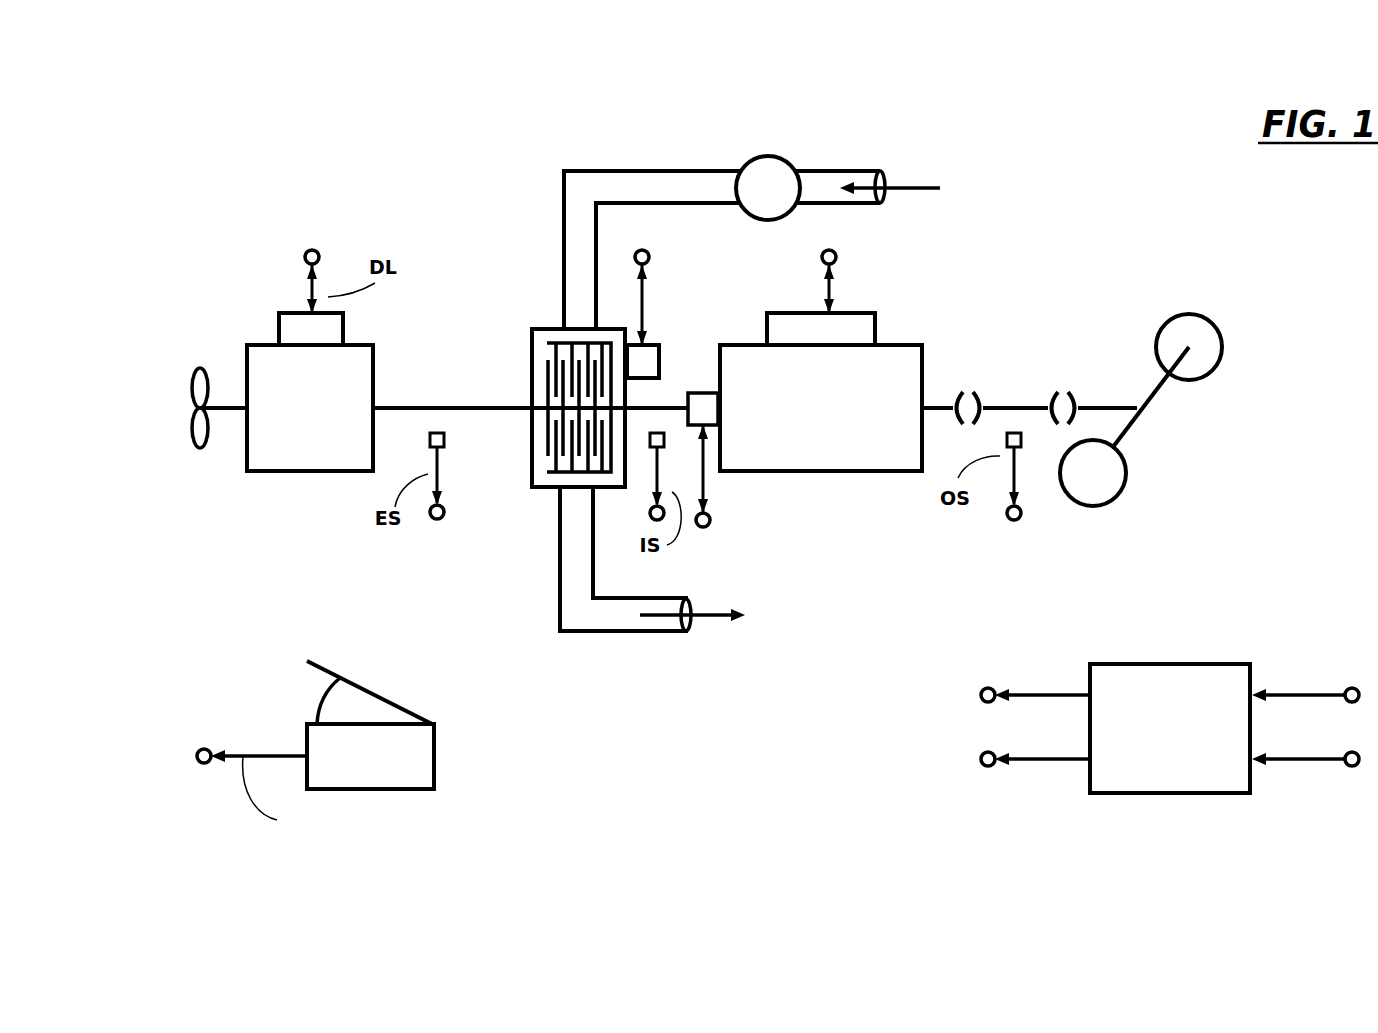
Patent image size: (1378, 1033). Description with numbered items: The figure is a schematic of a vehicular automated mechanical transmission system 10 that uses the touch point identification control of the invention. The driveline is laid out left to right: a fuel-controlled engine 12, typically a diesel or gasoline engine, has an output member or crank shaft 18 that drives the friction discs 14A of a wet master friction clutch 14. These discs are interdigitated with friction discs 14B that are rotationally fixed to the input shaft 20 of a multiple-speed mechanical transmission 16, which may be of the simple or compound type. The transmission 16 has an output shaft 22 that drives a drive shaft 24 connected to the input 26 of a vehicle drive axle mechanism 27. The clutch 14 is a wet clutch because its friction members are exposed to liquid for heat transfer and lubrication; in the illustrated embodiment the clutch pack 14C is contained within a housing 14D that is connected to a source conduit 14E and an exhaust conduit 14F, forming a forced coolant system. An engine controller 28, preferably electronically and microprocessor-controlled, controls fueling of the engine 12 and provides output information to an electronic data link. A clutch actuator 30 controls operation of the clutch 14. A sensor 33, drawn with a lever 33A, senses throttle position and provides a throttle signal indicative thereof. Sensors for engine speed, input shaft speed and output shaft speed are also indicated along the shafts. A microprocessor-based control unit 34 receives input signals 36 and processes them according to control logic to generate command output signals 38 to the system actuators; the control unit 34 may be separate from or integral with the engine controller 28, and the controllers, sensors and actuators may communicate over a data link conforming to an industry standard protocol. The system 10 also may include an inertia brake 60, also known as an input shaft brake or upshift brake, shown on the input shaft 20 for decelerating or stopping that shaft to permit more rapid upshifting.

The vehicular automated mechanical transmission system 10 is at (988, 95).
The fuel-controlled engine 12 is at (310, 440).
The wet master friction clutch 14 is at (458, 371).
The friction discs 14A is at (555, 392).
The friction discs 14B is at (557, 465).
The clutch pack 14C is at (547, 490).
The housing 14D is at (531, 329).
The source conduit 14E is at (582, 203).
The exhaust conduit 14F is at (585, 557).
The multiple-speed mechanical transmission 16 is at (845, 445).
The crank shaft 18 is at (423, 407).
The input shaft 20 is at (667, 406).
The output shaft 22 is at (858, 330).
The drive shaft 24 is at (998, 405).
The input 26 is at (1125, 405).
The vehicle drive axle mechanism 27 is at (1160, 441).
The engine controller 28 is at (297, 330).
The clutch actuator 30 is at (643, 360).
The sensor 33 is at (352, 740).
The throttle lever 33A is at (375, 691).
The microprocessor-based control unit 34 is at (1160, 764).
The input signals 36 is at (1312, 795).
The command output signals 38 is at (1028, 795).
The inertia brake 60 is at (716, 398).